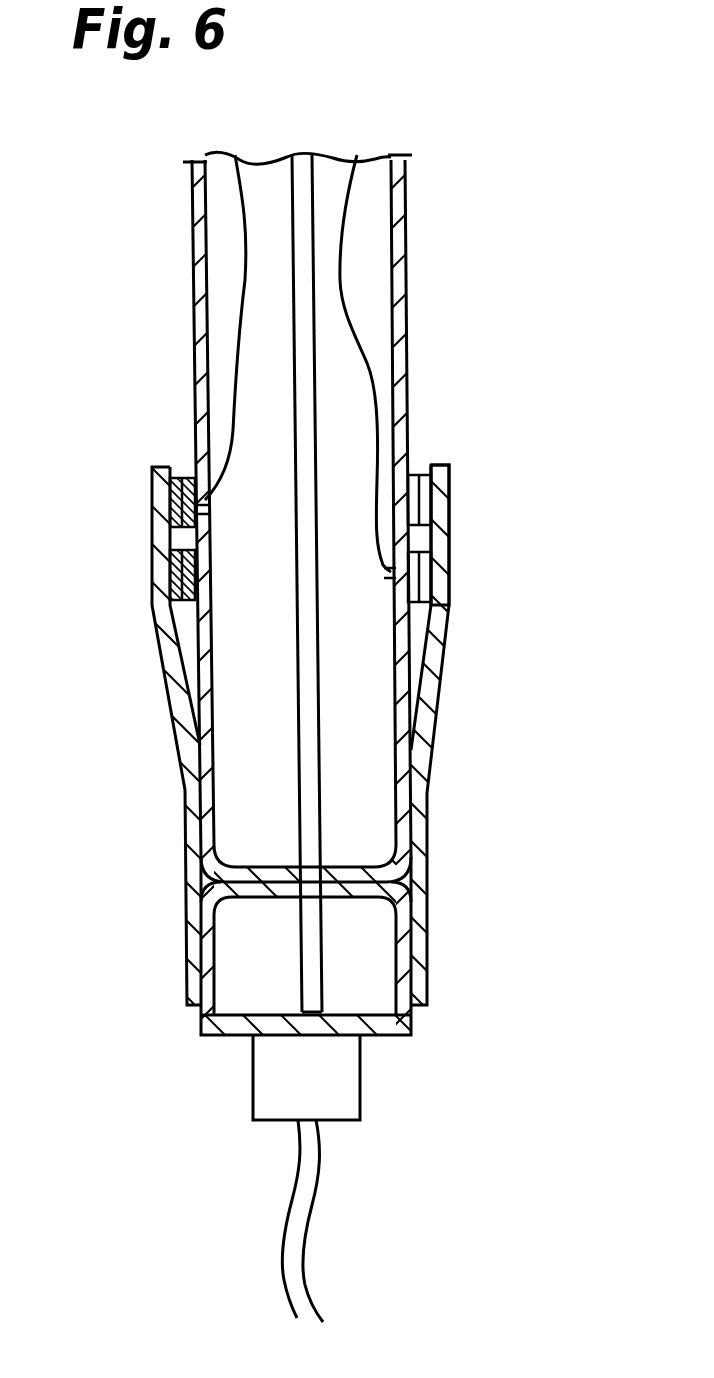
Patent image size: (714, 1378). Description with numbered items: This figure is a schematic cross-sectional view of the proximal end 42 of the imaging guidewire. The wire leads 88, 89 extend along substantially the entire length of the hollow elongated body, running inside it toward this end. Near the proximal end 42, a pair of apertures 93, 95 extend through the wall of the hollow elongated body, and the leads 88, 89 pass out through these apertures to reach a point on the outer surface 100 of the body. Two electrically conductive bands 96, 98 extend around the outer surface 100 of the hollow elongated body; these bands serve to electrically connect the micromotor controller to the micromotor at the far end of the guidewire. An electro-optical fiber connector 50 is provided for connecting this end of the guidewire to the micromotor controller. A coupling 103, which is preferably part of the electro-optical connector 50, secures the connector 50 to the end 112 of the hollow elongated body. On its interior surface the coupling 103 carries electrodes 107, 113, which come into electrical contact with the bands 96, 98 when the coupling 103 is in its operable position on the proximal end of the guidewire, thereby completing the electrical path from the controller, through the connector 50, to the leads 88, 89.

The proximal end 42 is at (363, 1092).
The electro-optical fiber connector 50 is at (400, 972).
The wire lead 88 is at (385, 399).
The wire lead 89 is at (237, 353).
The aperture 93 is at (392, 583).
The aperture 95 is at (205, 517).
The electrically conductive band 96 is at (440, 559).
The electrically conductive band 98 is at (447, 485).
The outer surface 100 is at (406, 342).
The coupling 103 is at (428, 866).
The electrode 107 is at (428, 511).
The end of the hollow elongated body 112 is at (427, 808).
The electrode 113 is at (432, 589).